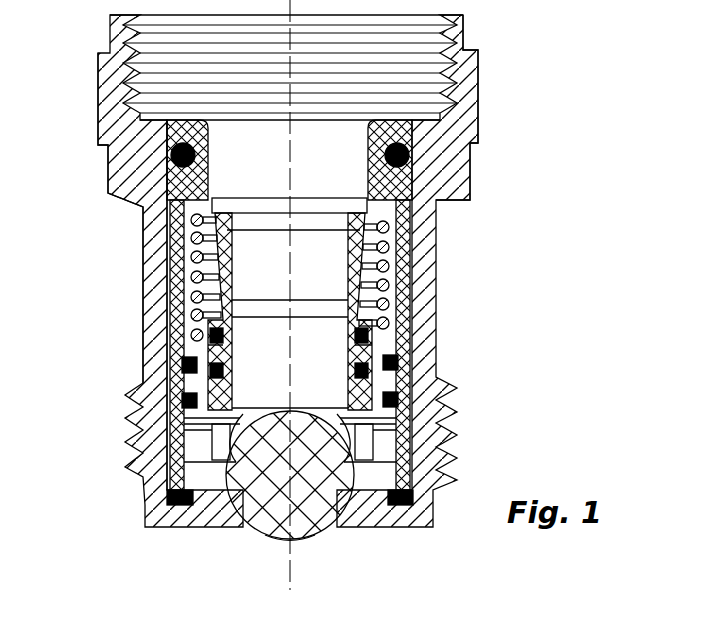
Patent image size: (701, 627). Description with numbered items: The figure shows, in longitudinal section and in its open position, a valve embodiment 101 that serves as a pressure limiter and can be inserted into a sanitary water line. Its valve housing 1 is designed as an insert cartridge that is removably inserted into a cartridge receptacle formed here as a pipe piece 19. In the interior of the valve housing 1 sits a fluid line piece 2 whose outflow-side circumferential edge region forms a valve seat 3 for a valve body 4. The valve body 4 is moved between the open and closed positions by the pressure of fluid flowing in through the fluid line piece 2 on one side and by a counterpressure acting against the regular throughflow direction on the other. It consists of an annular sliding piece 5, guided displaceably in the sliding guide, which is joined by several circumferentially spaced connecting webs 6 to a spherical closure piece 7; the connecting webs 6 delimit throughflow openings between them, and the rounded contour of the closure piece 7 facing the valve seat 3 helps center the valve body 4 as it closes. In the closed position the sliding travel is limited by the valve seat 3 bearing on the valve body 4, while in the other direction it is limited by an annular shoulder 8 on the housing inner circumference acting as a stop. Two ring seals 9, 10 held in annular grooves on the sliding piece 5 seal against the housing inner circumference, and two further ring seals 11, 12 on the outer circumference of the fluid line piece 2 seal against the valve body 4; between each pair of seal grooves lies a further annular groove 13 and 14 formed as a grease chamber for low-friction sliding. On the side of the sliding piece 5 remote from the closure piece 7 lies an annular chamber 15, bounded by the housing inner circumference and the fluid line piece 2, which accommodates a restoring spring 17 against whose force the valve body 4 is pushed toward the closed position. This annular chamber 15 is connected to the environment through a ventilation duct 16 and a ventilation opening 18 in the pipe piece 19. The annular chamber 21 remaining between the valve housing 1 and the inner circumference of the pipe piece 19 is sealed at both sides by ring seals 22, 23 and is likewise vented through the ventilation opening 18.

The valve embodiment 101 is at (543, 233).
The valve housing 1 is at (420, 320).
The fluid line piece 2 is at (353, 264).
The valve seat 3 is at (192, 467).
The valve body 4 is at (265, 502).
The sliding piece 5 is at (382, 348).
The connecting webs 6 is at (193, 435).
The closure piece 7 is at (317, 537).
The annular shoulder 8 is at (390, 450).
The ring seal 9 is at (167, 378).
The ring seal 10 is at (167, 397).
The ring seal 11 is at (232, 333).
The ring seal 12 is at (232, 372).
The annular groove 13 is at (222, 350).
The annular groove 14 is at (168, 353).
The annular chamber 15 is at (387, 237).
The ventilation duct 16 is at (178, 237).
The restoring spring 17 is at (398, 266).
The ventilation opening 18 is at (155, 243).
The pipe piece 19 is at (457, 165).
The annular chamber 21 is at (172, 290).
The ring seal 22 is at (415, 148).
The ring seal 23 is at (415, 495).